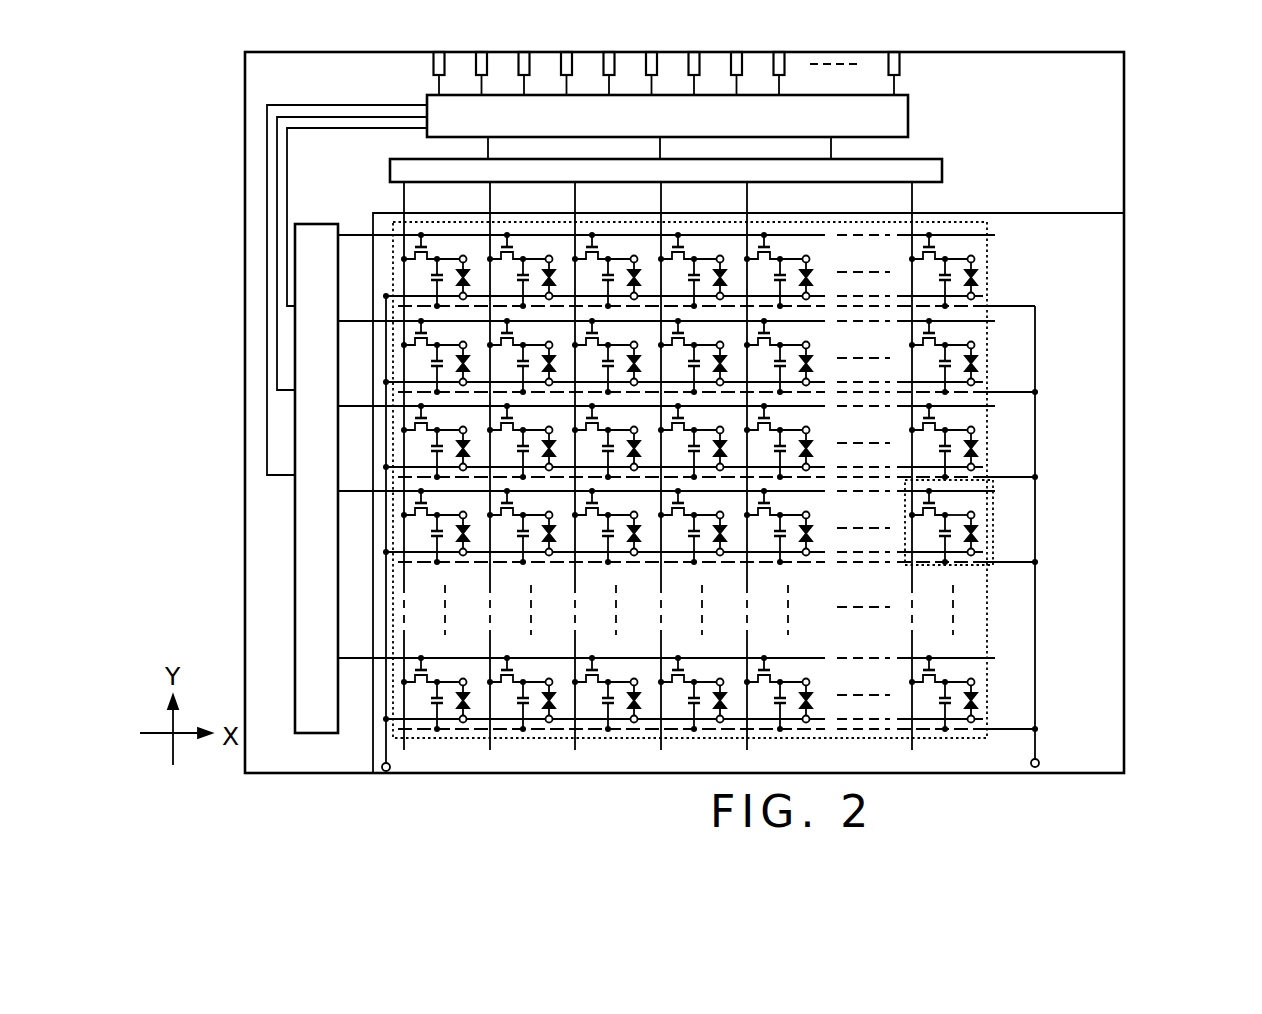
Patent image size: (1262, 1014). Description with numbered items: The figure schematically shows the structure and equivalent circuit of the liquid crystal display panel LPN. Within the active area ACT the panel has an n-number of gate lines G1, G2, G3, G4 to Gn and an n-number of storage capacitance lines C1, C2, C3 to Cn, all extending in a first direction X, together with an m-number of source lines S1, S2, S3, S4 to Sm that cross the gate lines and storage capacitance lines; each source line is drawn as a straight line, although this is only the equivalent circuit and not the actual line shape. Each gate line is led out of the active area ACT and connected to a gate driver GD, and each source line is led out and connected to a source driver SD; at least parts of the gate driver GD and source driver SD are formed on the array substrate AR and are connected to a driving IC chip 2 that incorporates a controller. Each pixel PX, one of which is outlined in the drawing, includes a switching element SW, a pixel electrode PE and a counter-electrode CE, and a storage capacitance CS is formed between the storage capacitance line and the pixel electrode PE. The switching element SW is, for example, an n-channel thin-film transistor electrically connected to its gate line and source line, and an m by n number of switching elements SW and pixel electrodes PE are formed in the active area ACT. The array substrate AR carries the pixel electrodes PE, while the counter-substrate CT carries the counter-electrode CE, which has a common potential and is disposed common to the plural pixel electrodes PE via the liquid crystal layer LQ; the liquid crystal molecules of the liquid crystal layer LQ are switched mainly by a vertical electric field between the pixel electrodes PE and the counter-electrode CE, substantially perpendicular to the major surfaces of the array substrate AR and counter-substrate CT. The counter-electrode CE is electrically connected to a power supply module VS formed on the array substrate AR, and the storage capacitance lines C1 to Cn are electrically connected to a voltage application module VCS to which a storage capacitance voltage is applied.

The liquid crystal display panel LPN is at (1157, 64).
The driving IC chip 2 is at (908, 115).
The source driver SD is at (942, 168).
The gate driver GD is at (295, 593).
The counter-substrate CT is at (1030, 213).
The array substrate AR is at (313, 764).
The active area ACT is at (990, 335).
The source line S1 is at (406, 207).
The source line S2 is at (492, 207).
The source line S3 is at (577, 207).
The source line S4 is at (663, 207).
The source line Sm is at (914, 207).
The gate line G1 is at (351, 234).
The gate line G2 is at (351, 320).
The gate line G3 is at (351, 405).
The gate line G4 is at (351, 490).
The gate line Gn is at (351, 657).
The storage capacitance line C1 is at (1007, 304).
The storage capacitance line C2 is at (1007, 390).
The storage capacitance line C3 is at (1007, 475).
The storage capacitance line Cn is at (1009, 727).
The pixel PX is at (990, 567).
The switching element SW is at (920, 500).
The storage capacitance CS is at (934, 530).
The pixel electrode PE is at (975, 507).
The liquid crystal layer LQ is at (976, 526).
The counter-electrode CE is at (980, 548).
The power supply module VS is at (390, 771).
The voltage application module VCS is at (1040, 761).